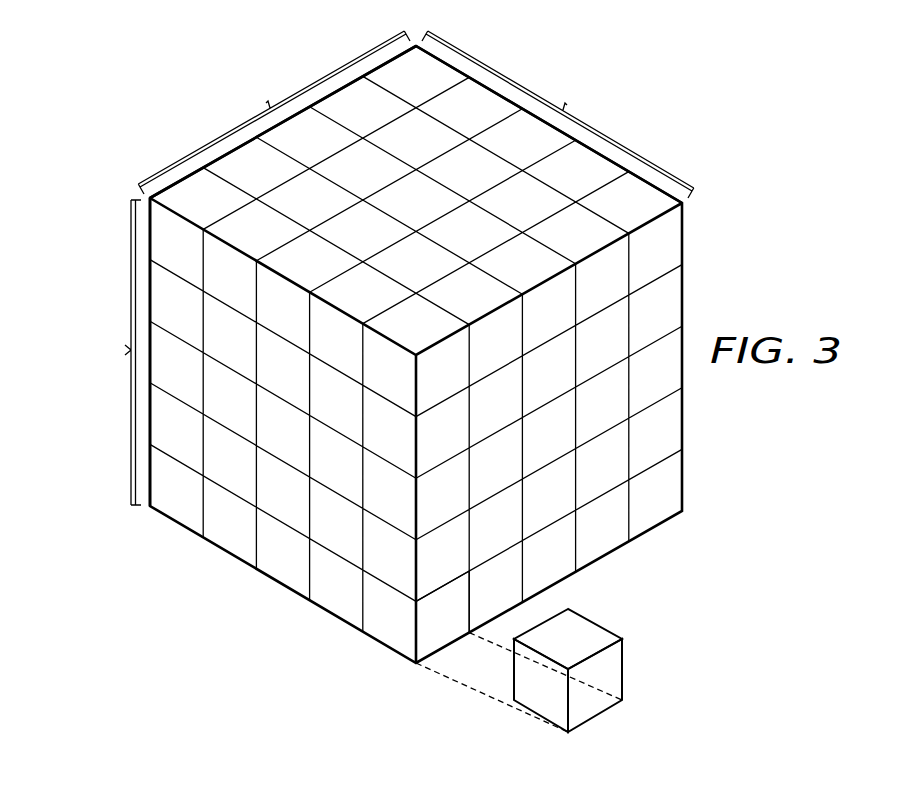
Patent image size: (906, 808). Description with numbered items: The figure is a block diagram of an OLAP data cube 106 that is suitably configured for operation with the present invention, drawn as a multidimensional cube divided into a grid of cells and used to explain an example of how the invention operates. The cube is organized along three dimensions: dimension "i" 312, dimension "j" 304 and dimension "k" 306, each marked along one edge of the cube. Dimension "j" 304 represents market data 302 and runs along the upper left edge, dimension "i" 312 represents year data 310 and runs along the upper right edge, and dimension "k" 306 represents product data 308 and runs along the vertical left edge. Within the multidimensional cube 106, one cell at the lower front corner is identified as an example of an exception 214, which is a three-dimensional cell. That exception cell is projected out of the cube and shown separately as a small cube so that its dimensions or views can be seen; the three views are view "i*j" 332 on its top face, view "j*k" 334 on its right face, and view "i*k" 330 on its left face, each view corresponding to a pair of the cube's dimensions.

The OLAP data cube 106 is at (192, 593).
The market data 302 is at (274, 112).
The dimension j 304 is at (177, 147).
The dimension k 306 is at (104, 455).
The product data 308 is at (131, 359).
The year data 310 is at (558, 114).
The dimension i 312 is at (628, 134).
The exception 214 is at (382, 633).
The view i*k 330 is at (530, 698).
The view i*j 332 is at (588, 628).
The view j*k 334 is at (617, 665).